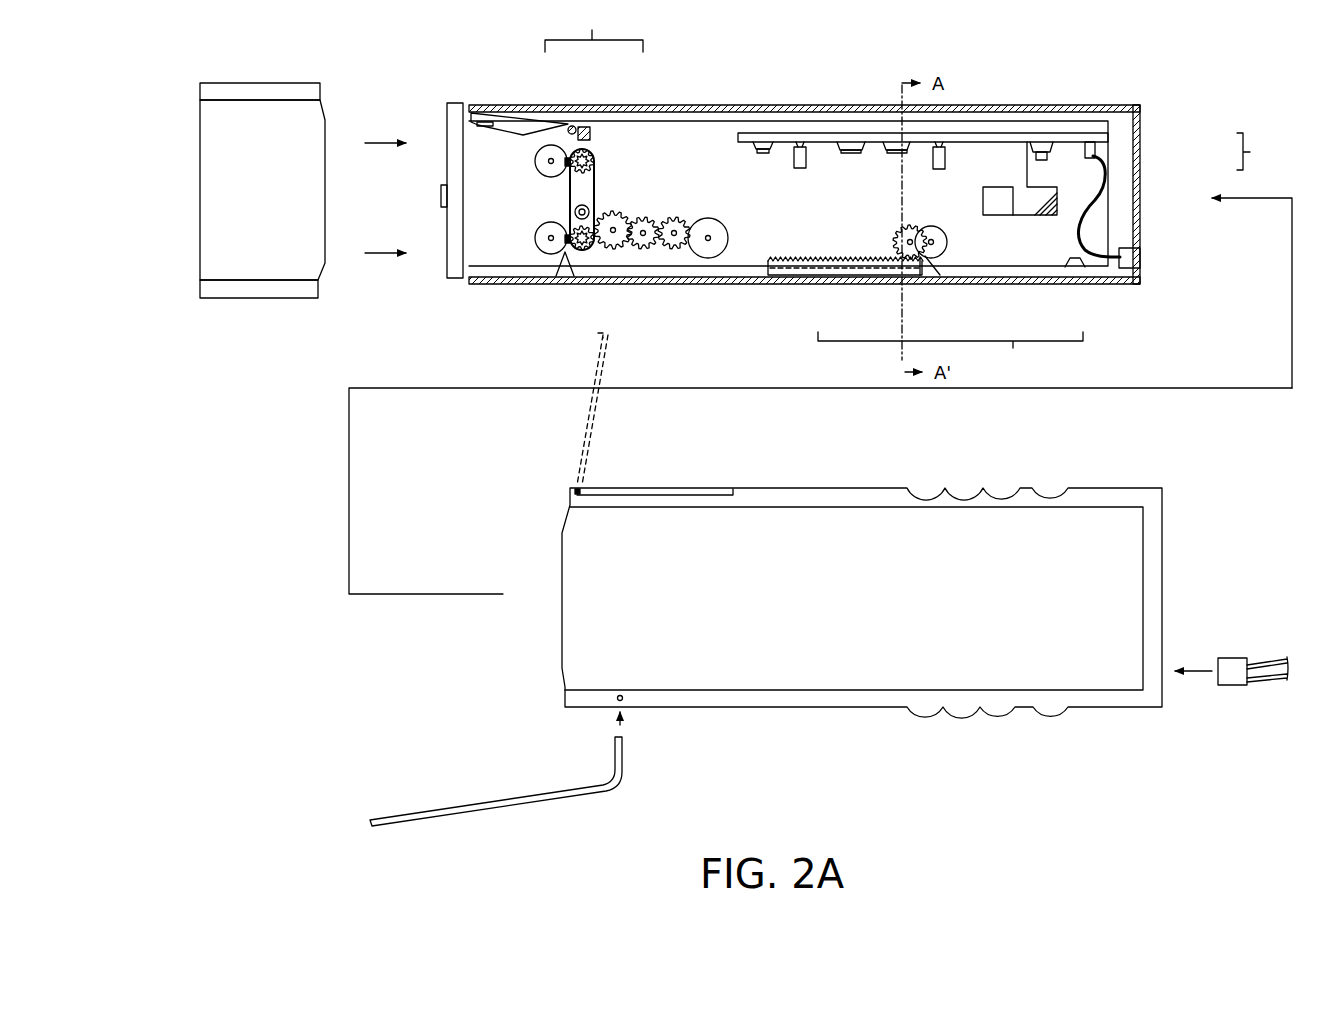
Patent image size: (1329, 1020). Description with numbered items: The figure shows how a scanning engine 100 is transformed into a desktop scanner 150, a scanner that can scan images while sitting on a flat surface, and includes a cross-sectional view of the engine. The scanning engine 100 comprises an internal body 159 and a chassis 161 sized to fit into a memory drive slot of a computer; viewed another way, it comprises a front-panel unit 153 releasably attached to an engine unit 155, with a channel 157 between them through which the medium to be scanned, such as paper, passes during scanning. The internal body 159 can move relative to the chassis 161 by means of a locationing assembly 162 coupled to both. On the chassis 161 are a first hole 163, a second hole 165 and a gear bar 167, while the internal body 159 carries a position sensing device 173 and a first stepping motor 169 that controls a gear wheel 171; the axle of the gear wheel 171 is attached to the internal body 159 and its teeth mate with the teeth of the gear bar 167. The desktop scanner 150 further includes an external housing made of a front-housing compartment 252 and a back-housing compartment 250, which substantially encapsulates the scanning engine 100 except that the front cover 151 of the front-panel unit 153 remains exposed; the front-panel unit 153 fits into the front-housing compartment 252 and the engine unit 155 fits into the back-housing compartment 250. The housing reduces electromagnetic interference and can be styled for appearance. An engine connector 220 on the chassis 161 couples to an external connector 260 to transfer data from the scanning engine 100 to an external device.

The scanning engine 100 is at (918, 88).
The desktop scanner 150 is at (1185, 85).
The front cover 151 is at (453, 138).
The front-panel unit 153 is at (502, 150).
The engine unit 155 is at (637, 153).
The channel 157 is at (566, 278).
The internal body 159 is at (1140, 180).
The chassis 161 is at (1140, 141).
The locationing assembly 162 is at (950, 355).
The first hole 163 is at (940, 256).
The second hole 165 is at (1077, 277).
The gear bar 167 is at (836, 270).
The first stepping motor 169 is at (927, 258).
The gear wheel 171 is at (897, 247).
The position sensing device 173 is at (1067, 260).
The engine connector 220 is at (1140, 258).
The back-housing compartment 250 is at (800, 700).
The front-housing compartment 252 is at (253, 288).
The external connector 260 is at (1233, 680).